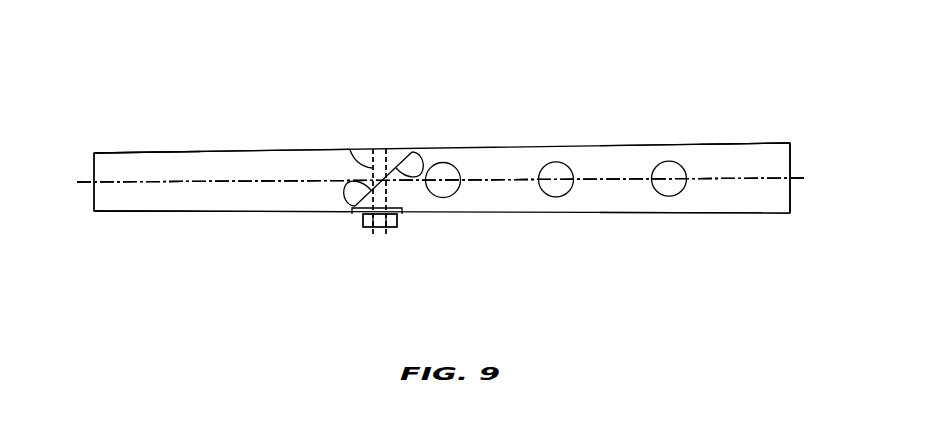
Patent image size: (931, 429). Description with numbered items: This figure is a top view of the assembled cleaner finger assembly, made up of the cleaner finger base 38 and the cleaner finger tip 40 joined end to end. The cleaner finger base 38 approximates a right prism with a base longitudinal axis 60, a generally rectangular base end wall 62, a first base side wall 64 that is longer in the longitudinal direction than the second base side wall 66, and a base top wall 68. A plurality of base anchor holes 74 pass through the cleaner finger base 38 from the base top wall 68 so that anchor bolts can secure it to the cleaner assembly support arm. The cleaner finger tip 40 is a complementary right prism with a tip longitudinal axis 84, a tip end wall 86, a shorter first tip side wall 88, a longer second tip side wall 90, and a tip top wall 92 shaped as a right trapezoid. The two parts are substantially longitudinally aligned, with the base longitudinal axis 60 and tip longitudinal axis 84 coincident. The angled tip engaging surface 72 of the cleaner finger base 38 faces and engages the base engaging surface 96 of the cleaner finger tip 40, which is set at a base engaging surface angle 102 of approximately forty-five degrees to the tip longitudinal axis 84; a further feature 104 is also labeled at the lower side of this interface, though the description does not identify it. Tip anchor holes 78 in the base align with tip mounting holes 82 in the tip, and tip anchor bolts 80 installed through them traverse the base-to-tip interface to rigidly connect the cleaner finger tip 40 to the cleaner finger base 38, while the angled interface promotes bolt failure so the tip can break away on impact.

The cleaner finger base 38 is at (522, 213).
The cleaner finger tip 40 is at (217, 212).
The base longitudinal axis 60 is at (82, 184).
The tip longitudinal axis 84 is at (82, 184).
The tip end wall 86 is at (94, 172).
The first tip side wall 88 is at (133, 212).
The second tip side wall 90 is at (195, 152).
The tip top wall 92 is at (118, 160).
The base anchor holes 74 is at (443, 173).
The second base side wall 66 is at (722, 144).
The base top wall 68 is at (765, 152).
The base end wall 62 is at (792, 165).
The first base side wall 64 is at (733, 212).
The tip engaging surface 72 is at (412, 150).
The base engaging surface 96 is at (373, 228).
The tip anchor bolts 80 is at (384, 228).
The tip anchor holes 78 is at (392, 197).
The tip mounting holes 82 is at (350, 150).
The base engaging surface angle 102 is at (418, 155).
The lower hook of clip 104 is at (341, 207).